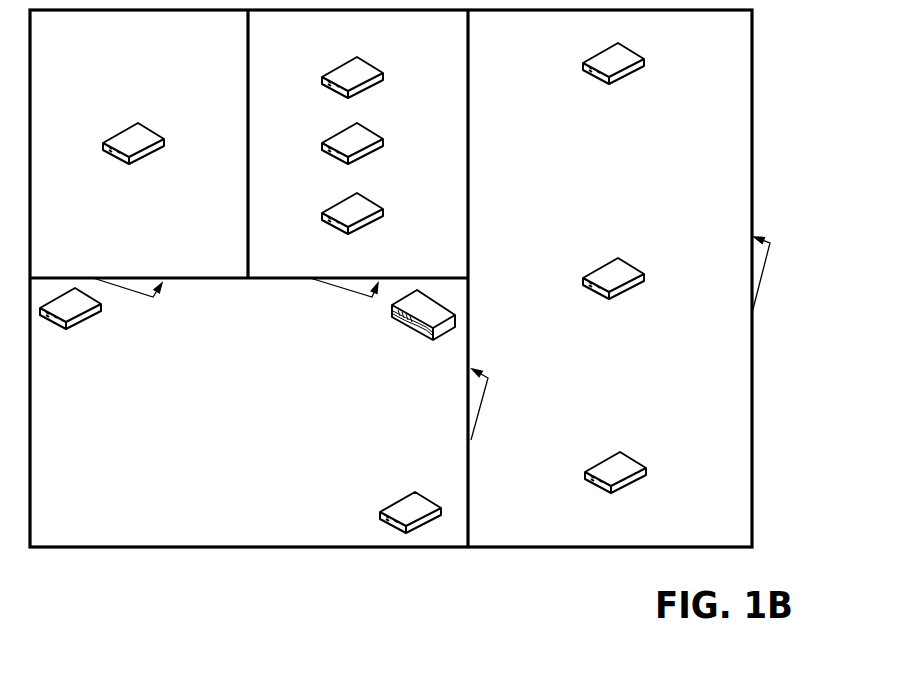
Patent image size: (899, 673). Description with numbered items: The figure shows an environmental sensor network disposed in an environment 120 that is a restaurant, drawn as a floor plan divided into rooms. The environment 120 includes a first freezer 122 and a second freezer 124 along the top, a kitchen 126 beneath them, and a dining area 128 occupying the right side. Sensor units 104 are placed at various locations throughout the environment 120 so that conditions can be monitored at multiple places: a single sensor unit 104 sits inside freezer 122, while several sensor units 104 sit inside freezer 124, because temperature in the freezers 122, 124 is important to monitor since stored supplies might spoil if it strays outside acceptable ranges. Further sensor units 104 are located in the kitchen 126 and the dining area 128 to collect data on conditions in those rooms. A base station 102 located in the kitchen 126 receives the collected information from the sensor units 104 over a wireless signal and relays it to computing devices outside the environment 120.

The base station 102 is at (407, 360).
The sensor unit 104 is at (110, 340).
The environment 120 is at (755, 107).
The freezer 122 is at (107, 41).
The freezer 124 is at (324, 41).
The kitchen 126 is at (216, 421).
The dining area 128 is at (623, 536).